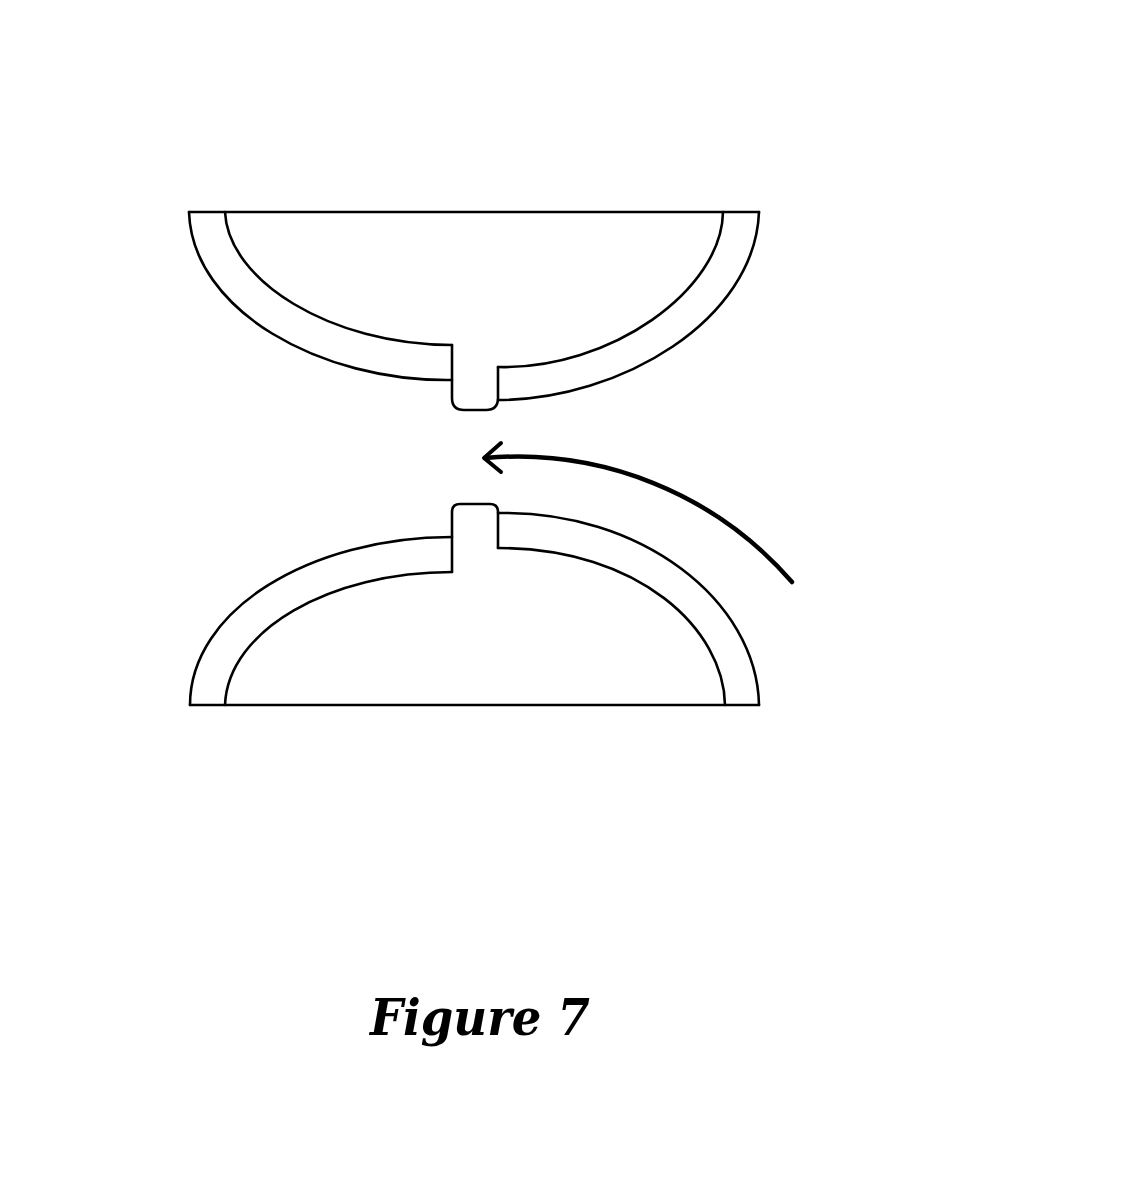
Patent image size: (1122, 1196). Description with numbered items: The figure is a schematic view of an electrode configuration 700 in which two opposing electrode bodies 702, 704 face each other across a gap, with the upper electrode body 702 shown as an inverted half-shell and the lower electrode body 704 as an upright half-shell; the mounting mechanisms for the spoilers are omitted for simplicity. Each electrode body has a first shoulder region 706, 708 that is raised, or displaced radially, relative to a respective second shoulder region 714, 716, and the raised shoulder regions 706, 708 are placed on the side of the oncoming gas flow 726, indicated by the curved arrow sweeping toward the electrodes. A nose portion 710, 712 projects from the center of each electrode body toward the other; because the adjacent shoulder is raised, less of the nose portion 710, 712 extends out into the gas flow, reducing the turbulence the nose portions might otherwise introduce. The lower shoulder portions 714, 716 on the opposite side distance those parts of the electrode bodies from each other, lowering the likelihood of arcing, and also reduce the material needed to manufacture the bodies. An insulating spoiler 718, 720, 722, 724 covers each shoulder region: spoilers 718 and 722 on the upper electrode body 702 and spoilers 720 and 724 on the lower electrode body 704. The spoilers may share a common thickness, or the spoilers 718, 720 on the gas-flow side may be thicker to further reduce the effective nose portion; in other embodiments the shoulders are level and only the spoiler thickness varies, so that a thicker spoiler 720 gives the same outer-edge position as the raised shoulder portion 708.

The electrode configuration 700 is at (657, 97).
The electrode body 702 is at (520, 233).
The electrode body 704 is at (450, 682).
The first shoulder region 706 is at (648, 322).
The first shoulder region 708 is at (647, 593).
The nose portion 710 is at (475, 398).
The nose portion 712 is at (463, 512).
The second shoulder region 714 is at (280, 298).
The second shoulder region 716 is at (270, 628).
The insulating spoiler 718 is at (700, 298).
The insulating spoiler 720 is at (738, 672).
The insulating spoiler 722 is at (250, 304).
The insulating spoiler 724 is at (225, 638).
The oncoming gas flow 726 is at (785, 560).